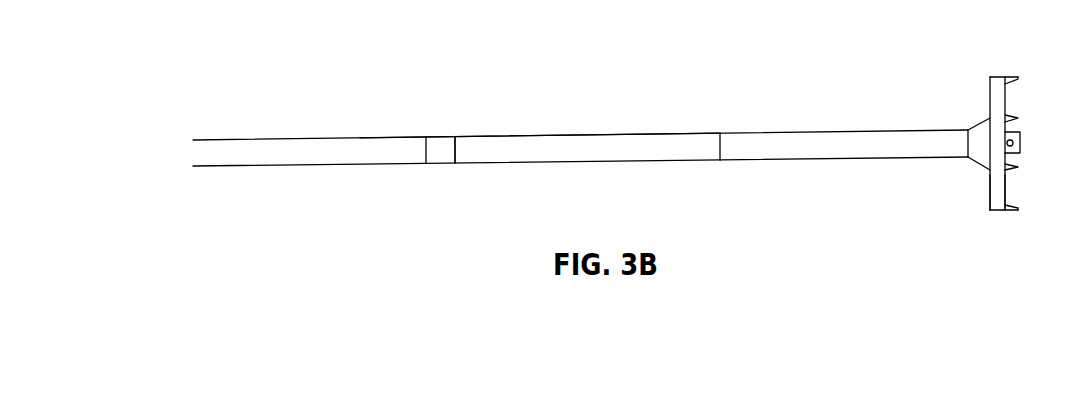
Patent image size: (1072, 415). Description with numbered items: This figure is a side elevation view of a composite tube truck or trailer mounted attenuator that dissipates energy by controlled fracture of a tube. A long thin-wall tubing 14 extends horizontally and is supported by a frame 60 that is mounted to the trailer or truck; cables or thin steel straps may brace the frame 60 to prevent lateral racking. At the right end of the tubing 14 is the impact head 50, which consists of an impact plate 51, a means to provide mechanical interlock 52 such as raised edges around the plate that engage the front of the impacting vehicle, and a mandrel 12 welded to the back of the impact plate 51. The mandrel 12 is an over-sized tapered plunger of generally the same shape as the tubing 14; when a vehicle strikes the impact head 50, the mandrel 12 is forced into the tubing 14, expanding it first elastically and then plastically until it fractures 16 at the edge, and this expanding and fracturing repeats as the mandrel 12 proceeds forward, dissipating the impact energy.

The mandrel 12 is at (961, 107).
The thin-wall tubing 14 is at (580, 121).
The fracture 16 is at (650, 120).
The impact head 50 is at (1025, 114).
The impact plate 51 is at (964, 202).
The means to provide mechanical interlock 52 is at (1033, 105).
The frame 60 is at (437, 135).